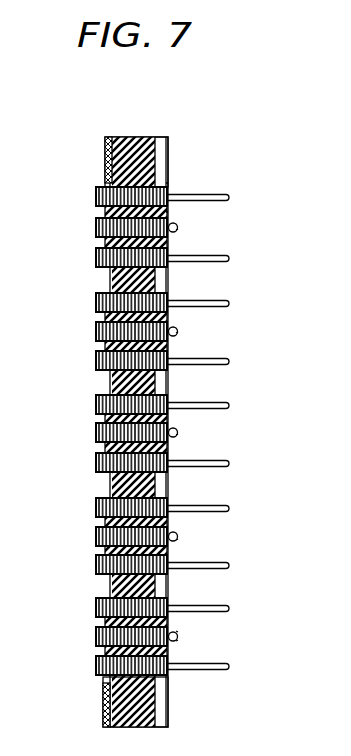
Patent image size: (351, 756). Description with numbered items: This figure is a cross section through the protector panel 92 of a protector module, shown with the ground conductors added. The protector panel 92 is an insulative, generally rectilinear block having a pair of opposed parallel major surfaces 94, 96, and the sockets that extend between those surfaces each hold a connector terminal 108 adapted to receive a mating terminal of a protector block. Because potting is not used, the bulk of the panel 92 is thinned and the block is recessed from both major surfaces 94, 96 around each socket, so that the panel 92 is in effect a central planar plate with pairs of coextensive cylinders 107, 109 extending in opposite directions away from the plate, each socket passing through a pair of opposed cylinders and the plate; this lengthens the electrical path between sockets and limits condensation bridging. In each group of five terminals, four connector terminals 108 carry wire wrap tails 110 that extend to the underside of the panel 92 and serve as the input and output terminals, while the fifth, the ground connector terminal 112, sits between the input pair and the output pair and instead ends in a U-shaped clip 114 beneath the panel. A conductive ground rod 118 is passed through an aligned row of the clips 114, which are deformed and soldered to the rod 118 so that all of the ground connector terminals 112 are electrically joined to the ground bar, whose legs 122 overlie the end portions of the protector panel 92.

The protector panel 92 is at (167, 708).
The major surface 94 is at (97, 668).
The major surface 96 is at (177, 632).
The cylinder 107 is at (100, 245).
The connector terminal 108 is at (97, 510).
The cylinder 109 is at (166, 190).
The wire wrap tail 110 is at (229, 511).
The ground connector terminal 112 is at (97, 541).
The U-shaped clip 114 is at (178, 226).
The conductive ground rod 118 is at (176, 230).
The leg 122 is at (105, 157).